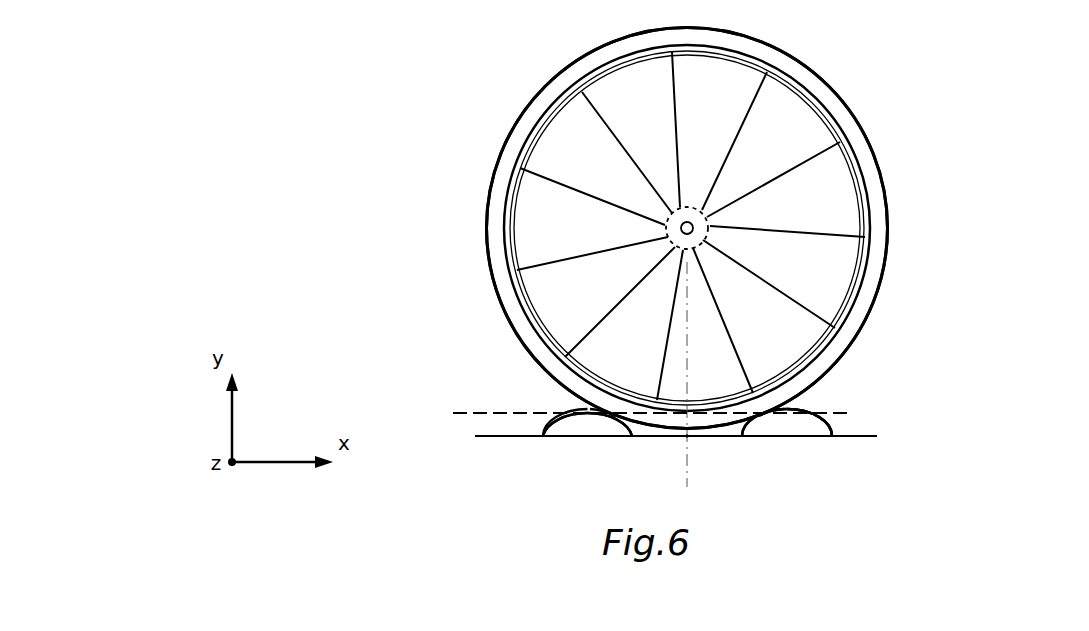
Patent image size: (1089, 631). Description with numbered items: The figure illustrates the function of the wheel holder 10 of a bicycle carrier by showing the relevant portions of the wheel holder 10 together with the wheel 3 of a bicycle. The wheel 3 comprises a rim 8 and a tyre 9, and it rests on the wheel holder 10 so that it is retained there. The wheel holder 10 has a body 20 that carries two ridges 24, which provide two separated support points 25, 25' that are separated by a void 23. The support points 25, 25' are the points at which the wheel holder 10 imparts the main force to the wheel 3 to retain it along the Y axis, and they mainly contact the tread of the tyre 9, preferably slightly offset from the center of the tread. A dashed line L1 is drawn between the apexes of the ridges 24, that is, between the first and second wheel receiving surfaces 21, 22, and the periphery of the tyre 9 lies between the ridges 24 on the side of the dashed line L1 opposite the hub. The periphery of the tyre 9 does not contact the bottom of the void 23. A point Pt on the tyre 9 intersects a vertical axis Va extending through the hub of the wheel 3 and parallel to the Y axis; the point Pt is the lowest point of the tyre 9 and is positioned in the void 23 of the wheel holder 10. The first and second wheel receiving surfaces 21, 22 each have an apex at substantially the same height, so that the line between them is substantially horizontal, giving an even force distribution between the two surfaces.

The first wheel 3 is at (901, 202).
The rim 8 is at (808, 98).
The tyre 9 is at (840, 98).
The wheel holder 10 is at (816, 439).
The body 20 is at (613, 430).
The first wheel receiving surface 21 is at (548, 423).
The second wheel receiving surface 22 is at (807, 411).
The void 23 is at (729, 431).
The ridges 24 is at (585, 427).
The support point 25 is at (609, 375).
The support point 25' is at (768, 368).
The dashed line L1 is at (480, 413).
The vertical axis Va is at (689, 305).
The point Pt is at (680, 434).